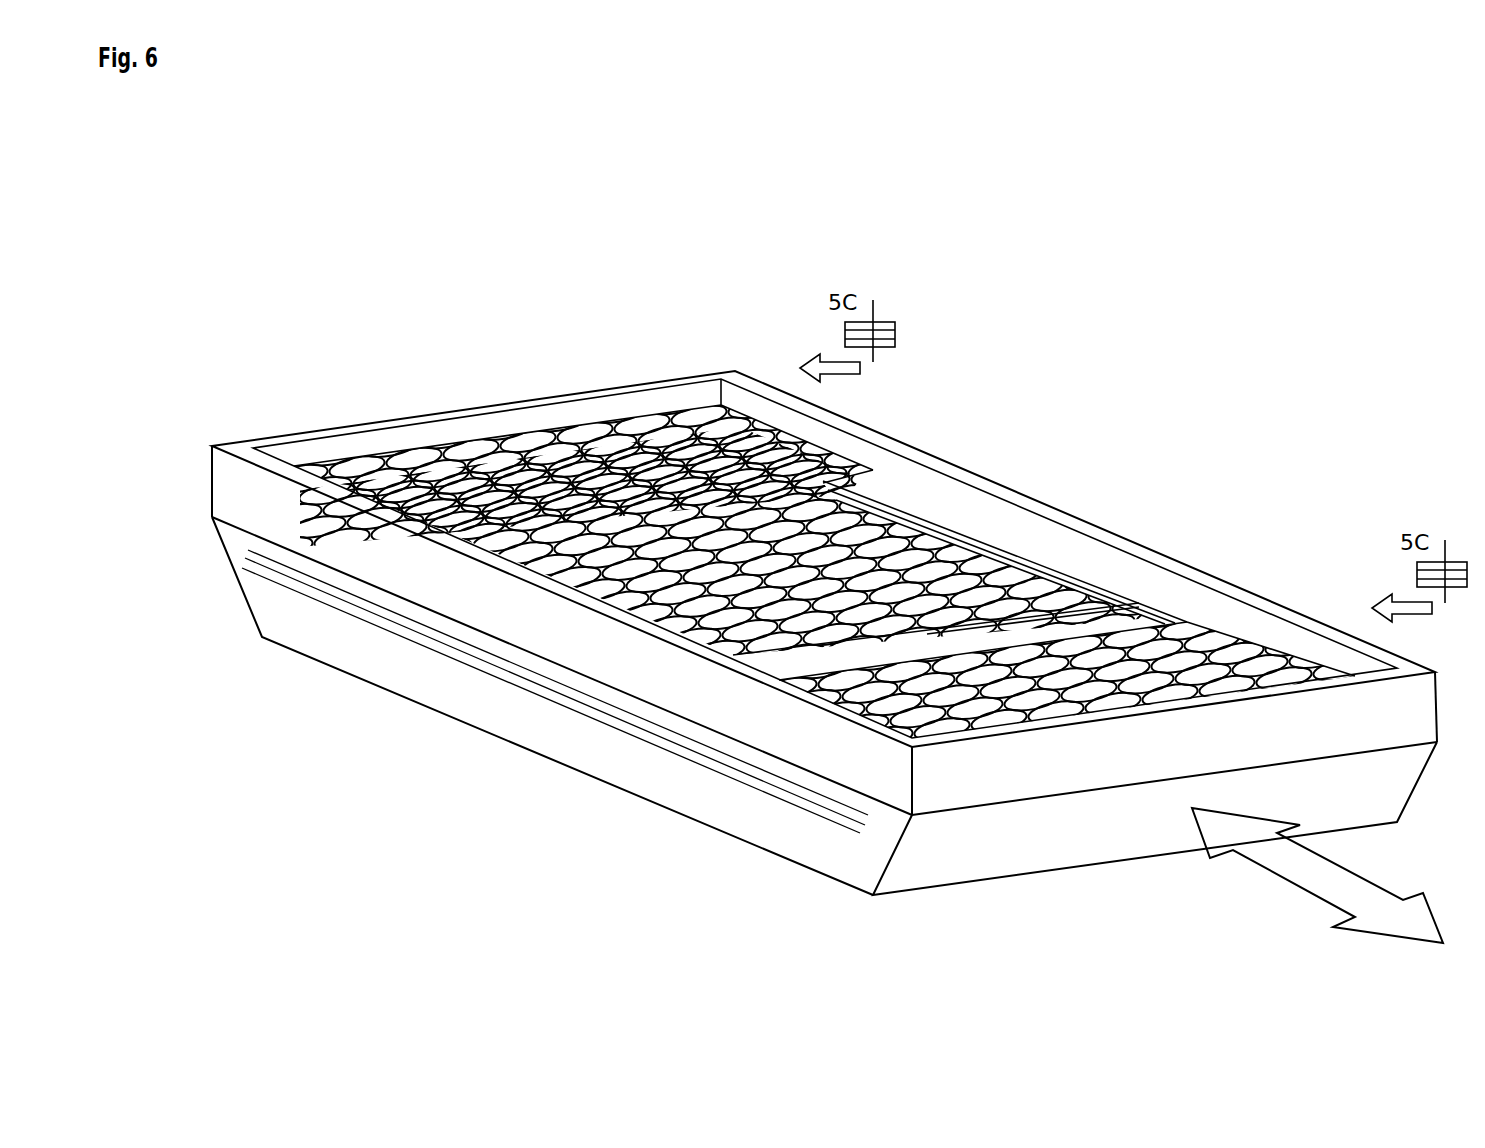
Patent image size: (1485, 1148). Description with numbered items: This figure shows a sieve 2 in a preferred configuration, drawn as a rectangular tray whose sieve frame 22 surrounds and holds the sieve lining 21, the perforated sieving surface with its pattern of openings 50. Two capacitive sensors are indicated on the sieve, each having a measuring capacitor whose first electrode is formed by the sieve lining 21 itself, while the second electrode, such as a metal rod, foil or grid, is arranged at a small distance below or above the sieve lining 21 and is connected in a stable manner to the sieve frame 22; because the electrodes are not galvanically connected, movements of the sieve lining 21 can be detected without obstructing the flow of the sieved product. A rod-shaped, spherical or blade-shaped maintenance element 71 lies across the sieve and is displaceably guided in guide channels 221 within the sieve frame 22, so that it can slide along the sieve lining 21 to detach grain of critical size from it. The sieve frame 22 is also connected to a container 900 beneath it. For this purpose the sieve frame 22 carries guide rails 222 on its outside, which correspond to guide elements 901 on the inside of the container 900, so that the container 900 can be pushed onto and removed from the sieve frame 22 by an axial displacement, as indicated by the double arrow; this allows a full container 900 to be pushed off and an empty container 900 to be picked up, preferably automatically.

The sieve 2 is at (1230, 536).
The sieve lining 21 is at (942, 550).
The sieve frame 22 is at (940, 470).
The guide channels 221 is at (1040, 556).
The guide rails 222 is at (568, 718).
The optical elements 50 is at (577, 442).
The maintenance element 71 is at (1087, 625).
The container 900 is at (1028, 833).
The guide elements 901 is at (555, 717).